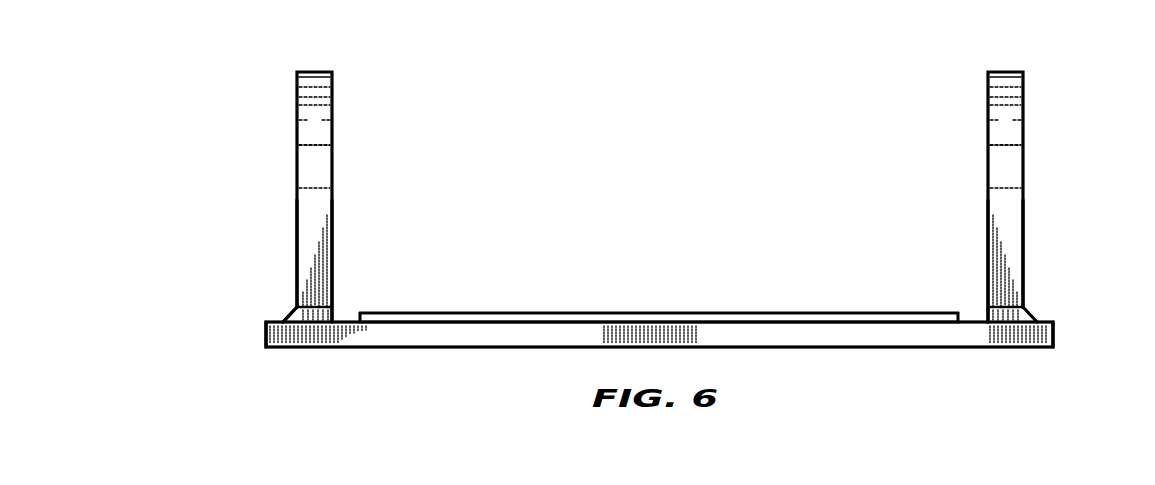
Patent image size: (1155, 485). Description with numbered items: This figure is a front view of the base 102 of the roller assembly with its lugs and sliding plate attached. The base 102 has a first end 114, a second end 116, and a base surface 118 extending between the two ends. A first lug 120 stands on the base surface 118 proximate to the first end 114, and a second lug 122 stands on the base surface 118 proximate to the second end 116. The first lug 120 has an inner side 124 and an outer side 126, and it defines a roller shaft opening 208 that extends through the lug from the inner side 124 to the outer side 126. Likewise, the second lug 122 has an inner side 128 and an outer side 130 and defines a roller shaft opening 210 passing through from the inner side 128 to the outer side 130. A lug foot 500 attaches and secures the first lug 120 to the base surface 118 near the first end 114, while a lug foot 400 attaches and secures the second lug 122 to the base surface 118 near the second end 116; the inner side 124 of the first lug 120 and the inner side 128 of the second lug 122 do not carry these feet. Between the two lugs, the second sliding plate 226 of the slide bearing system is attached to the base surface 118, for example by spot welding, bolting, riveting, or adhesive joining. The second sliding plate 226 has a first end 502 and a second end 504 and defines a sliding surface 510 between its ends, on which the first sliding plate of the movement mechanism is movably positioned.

The base 102 is at (470, 347).
The first end 114 is at (266, 332).
The second end 116 is at (1055, 330).
The base surface 118 is at (338, 318).
The first lug 120 is at (307, 72).
The second lug 122 is at (1005, 72).
The inner side 124 is at (332, 235).
The outer side 126 is at (297, 238).
The inner side 128 is at (988, 222).
The outer side 130 is at (1023, 245).
The roller shaft opening 208 is at (312, 147).
The roller shaft opening 210 is at (1008, 147).
The second sliding plate 226 is at (502, 313).
The lug foot 400 is at (1013, 320).
The lug foot 500 is at (308, 318).
The first end 502 is at (352, 318).
The second end 504 is at (960, 313).
The sliding surface 510 is at (727, 311).